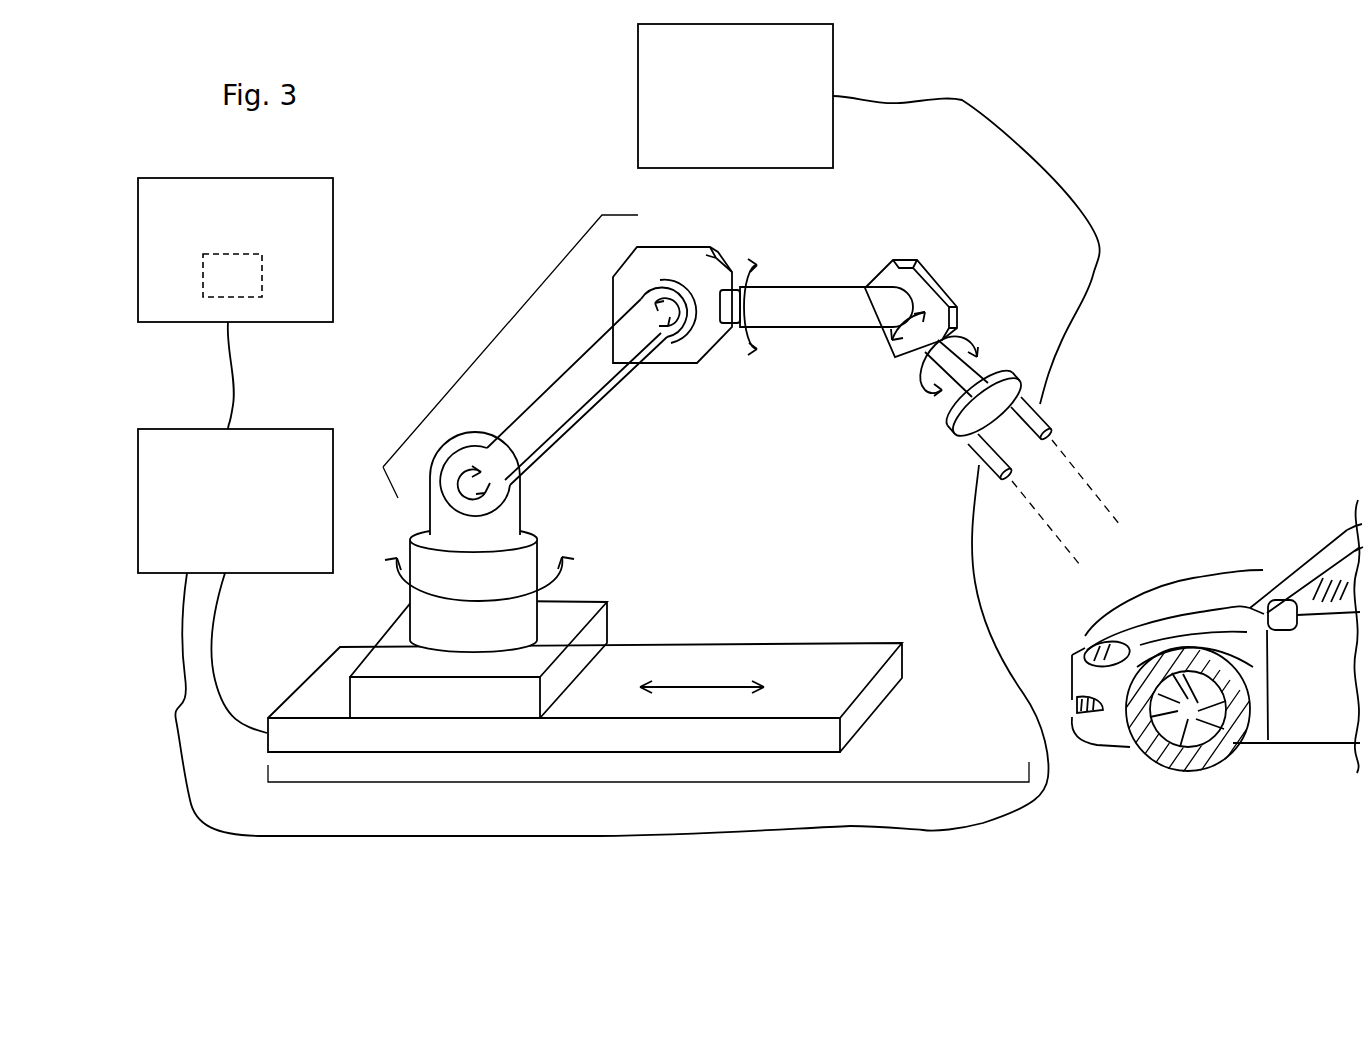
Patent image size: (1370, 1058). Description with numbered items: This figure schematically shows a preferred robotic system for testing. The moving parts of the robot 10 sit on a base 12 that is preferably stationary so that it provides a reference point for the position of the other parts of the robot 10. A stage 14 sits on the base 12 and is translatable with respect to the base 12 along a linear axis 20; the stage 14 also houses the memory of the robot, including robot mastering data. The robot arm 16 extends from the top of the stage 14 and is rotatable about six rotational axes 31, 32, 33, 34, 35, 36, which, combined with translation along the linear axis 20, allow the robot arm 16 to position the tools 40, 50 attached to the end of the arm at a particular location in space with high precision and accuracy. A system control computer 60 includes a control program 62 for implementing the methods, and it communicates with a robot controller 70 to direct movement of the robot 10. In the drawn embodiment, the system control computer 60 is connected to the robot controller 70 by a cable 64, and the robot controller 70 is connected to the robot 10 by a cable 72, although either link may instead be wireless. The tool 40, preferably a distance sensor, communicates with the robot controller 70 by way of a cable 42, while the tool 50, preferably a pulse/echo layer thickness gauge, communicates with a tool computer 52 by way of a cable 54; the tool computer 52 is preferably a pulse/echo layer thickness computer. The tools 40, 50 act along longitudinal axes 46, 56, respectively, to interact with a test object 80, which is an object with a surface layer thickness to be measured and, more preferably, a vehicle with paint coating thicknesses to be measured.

The robot 10 is at (648, 789).
The base 12 is at (585, 697).
The stage 14 is at (478, 659).
The robot arm 16 is at (525, 356).
The linear axis 20 is at (702, 674).
The rotational axis 31 is at (479, 591).
The rotational axis 32 is at (475, 483).
The rotational axis 33 is at (672, 305).
The rotational axis 34 is at (816, 320).
The rotational axis 35 is at (908, 347).
The rotational axis 36 is at (963, 363).
The tool 40 is at (988, 458).
The cable 42 is at (504, 704).
The longitudinal axis 46 is at (1024, 499).
The tool 50 is at (1040, 423).
The tool computer 52 is at (735, 96).
The cable 54 is at (966, 463).
The longitudinal axis 56 is at (1087, 482).
The system control computer 60 is at (235, 250).
The control program 62 is at (232, 275).
The cable 64 is at (217, 375).
The robot controller 70 is at (235, 501).
The cable 72 is at (239, 653).
The test object 80 is at (1217, 680).